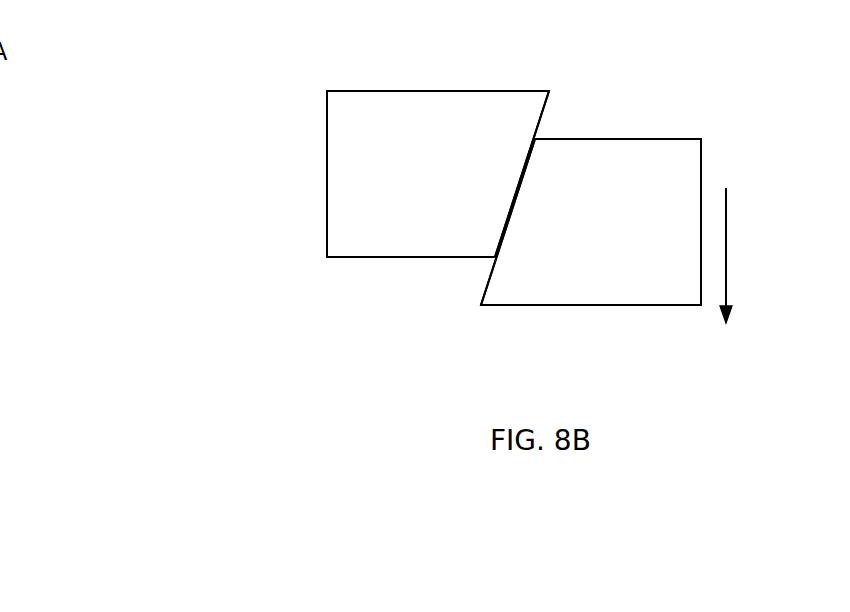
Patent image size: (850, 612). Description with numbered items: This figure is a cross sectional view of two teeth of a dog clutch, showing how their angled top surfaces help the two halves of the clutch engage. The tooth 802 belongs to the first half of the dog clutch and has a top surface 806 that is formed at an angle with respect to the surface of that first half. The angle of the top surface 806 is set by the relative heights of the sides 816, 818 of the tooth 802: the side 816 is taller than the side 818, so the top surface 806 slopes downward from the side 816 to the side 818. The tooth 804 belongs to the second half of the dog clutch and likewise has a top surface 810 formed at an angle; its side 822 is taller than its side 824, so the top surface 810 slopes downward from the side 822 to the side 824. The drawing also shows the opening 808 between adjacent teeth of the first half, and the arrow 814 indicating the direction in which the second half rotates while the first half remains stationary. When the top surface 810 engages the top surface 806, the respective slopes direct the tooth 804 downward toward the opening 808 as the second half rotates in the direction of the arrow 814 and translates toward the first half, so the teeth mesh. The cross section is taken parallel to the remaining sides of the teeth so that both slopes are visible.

The tooth 802 is at (478, 75).
The tooth 804 is at (638, 102).
The top surface 806 is at (530, 153).
The opening 808 is at (358, 302).
The top surface 810 is at (503, 235).
The arrow 814 is at (727, 239).
The side 816 is at (377, 91).
The side 818 is at (406, 257).
The side 822 is at (637, 305).
The side 824 is at (615, 139).